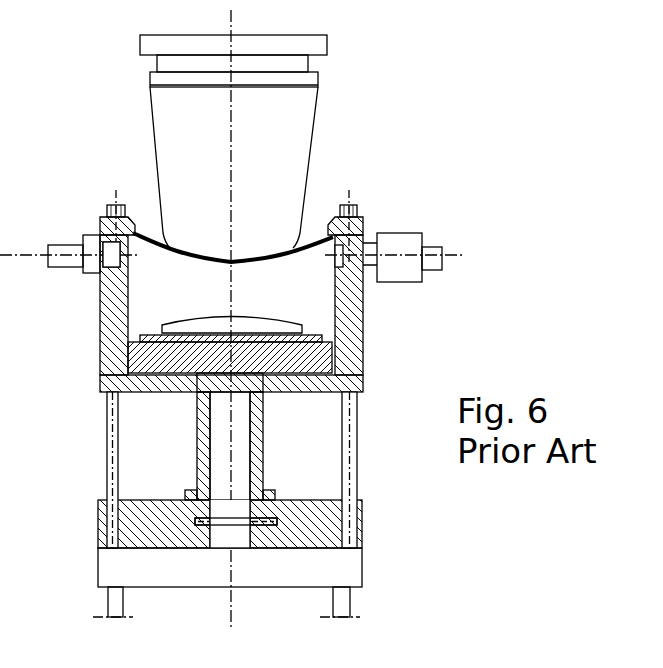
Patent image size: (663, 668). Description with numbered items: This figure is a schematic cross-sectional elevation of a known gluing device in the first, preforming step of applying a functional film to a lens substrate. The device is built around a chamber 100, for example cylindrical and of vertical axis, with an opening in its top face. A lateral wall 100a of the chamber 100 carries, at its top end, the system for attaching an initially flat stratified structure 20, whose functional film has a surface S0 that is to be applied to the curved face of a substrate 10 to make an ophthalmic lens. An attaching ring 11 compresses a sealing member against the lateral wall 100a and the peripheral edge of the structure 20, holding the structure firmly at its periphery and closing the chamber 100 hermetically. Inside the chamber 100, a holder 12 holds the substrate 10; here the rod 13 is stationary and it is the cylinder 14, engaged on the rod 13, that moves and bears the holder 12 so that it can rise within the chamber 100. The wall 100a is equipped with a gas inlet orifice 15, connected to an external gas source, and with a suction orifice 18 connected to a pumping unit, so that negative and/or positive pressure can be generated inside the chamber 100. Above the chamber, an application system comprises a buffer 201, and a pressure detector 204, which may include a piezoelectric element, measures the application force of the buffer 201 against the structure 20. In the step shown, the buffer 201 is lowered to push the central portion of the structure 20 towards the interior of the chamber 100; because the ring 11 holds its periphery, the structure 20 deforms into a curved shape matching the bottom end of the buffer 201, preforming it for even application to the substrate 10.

The pressure detector 204 is at (170, 63).
The buffer 201 is at (165, 107).
The suction orifice 18 is at (62, 250).
The lateral wall 100a is at (112, 283).
The attaching ring 11 is at (330, 226).
The cylinder 14 is at (325, 358).
The gas inlet orifice 15 is at (408, 240).
The holder 12 is at (128, 343).
The substrate 10 is at (160, 320).
The rod 13 is at (240, 455).
The stratified structure 20 is at (160, 250).
The surface of the functional film S0 is at (296, 251).
The chamber 100 is at (378, 186).